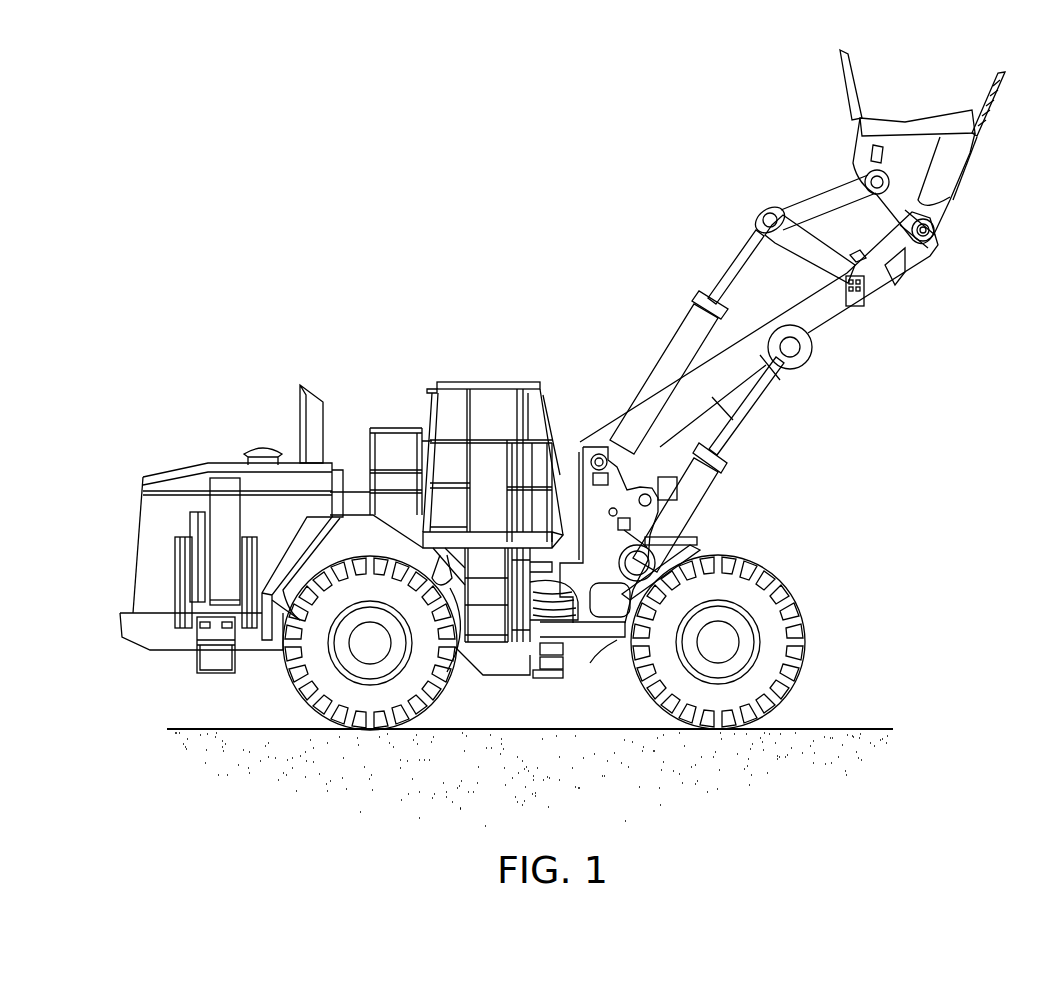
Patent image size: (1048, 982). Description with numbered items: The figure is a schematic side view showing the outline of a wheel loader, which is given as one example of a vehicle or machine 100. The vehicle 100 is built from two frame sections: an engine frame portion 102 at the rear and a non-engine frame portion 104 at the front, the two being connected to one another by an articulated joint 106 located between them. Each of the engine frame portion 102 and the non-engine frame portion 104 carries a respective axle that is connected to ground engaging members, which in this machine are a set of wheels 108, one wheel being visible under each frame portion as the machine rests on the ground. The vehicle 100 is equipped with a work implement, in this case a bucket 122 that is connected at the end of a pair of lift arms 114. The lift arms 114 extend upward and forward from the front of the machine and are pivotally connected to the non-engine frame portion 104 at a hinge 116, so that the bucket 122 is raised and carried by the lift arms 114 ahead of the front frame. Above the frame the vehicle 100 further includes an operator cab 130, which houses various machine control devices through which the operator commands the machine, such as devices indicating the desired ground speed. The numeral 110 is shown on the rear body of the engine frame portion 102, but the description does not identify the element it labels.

The vehicle 100 is at (662, 118).
The engine frame portion 102 is at (238, 382).
The non-engine frame portion 104 is at (590, 663).
The articulated joint 106 is at (549, 690).
The wheels 108 is at (442, 697).
The engine enclosure 110 is at (226, 458).
The lift arms 114 is at (817, 323).
The hinge 116 is at (652, 502).
The bucket 122 is at (890, 127).
The operator cab 130 is at (483, 380).